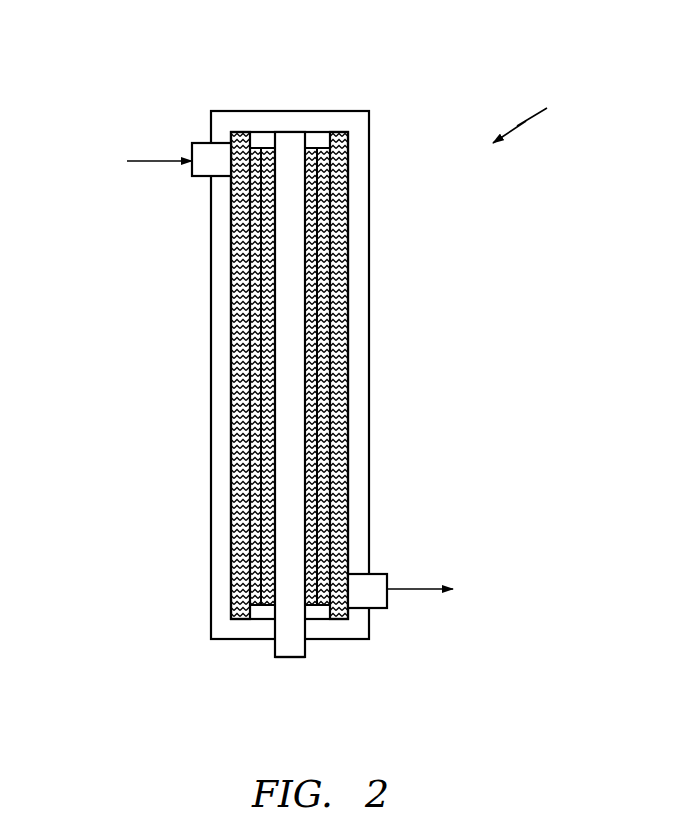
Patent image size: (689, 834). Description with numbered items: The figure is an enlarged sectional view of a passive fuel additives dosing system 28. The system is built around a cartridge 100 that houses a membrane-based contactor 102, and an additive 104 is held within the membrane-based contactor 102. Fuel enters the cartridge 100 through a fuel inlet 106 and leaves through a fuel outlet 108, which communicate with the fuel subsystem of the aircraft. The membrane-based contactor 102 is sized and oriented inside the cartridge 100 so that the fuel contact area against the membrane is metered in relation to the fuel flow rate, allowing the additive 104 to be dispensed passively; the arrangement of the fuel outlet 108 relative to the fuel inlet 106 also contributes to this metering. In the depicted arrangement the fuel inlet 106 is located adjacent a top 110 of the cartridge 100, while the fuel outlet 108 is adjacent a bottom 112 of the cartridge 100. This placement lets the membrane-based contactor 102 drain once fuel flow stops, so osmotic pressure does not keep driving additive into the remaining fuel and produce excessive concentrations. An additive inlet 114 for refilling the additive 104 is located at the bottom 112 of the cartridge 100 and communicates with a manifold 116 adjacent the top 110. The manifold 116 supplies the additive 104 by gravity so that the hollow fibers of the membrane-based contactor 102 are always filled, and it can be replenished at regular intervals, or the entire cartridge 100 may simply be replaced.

The passive fuel additives dosing system 28 is at (538, 111).
The cartridge 100 is at (300, 374).
The membrane-based contactor 102 is at (345, 148).
The additive 104 is at (305, 172).
The fuel inlet 106 is at (204, 143).
The fuel outlet 108 is at (377, 574).
The top 110 is at (233, 111).
The bottom 112 is at (330, 640).
The additive inlet 114 is at (273, 651).
The manifold 116 is at (280, 138).